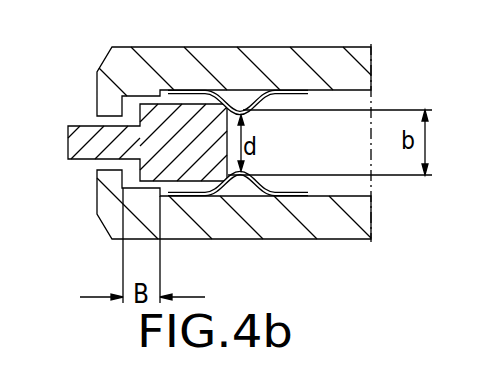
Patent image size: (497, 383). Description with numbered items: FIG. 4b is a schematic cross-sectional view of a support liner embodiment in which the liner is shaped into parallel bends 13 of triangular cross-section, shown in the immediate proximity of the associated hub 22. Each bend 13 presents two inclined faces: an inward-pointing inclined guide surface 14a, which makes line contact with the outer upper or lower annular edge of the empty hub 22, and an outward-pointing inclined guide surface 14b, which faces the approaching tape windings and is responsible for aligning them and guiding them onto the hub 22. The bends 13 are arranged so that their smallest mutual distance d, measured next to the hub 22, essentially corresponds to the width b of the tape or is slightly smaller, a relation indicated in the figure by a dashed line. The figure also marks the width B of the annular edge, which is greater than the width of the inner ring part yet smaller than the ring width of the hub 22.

The parallel bends 13 is at (241, 110).
The inward-pointing inclined guide surface 14a is at (273, 96).
The outward-pointing inclined guide surface 14b is at (206, 96).
The hub 22 is at (148, 148).